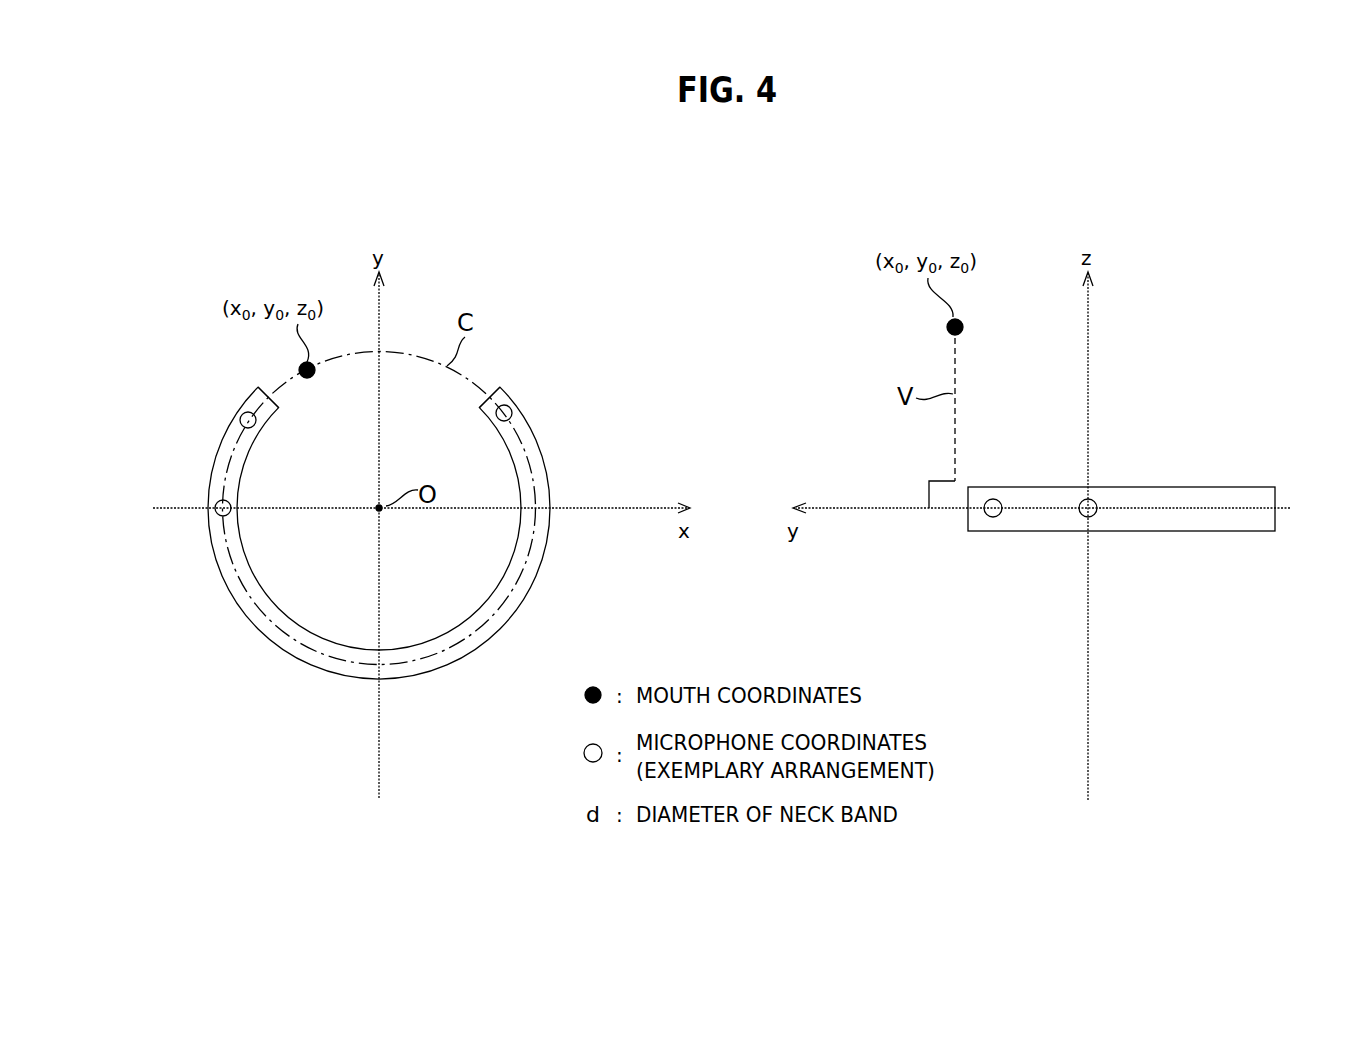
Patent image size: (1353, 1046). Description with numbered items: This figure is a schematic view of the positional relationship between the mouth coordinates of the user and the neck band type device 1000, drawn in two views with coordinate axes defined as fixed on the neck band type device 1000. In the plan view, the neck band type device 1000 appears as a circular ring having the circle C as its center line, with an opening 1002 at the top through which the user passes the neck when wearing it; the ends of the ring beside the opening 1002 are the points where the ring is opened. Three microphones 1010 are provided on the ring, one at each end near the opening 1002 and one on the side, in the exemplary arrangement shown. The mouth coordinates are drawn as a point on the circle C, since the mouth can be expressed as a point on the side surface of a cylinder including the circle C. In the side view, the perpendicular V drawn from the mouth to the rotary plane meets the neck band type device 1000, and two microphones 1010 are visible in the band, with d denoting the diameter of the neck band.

The neck band type device 1000 is at (548, 452).
The opening 1002 is at (262, 385).
The microphone 1010 is at (240, 418).